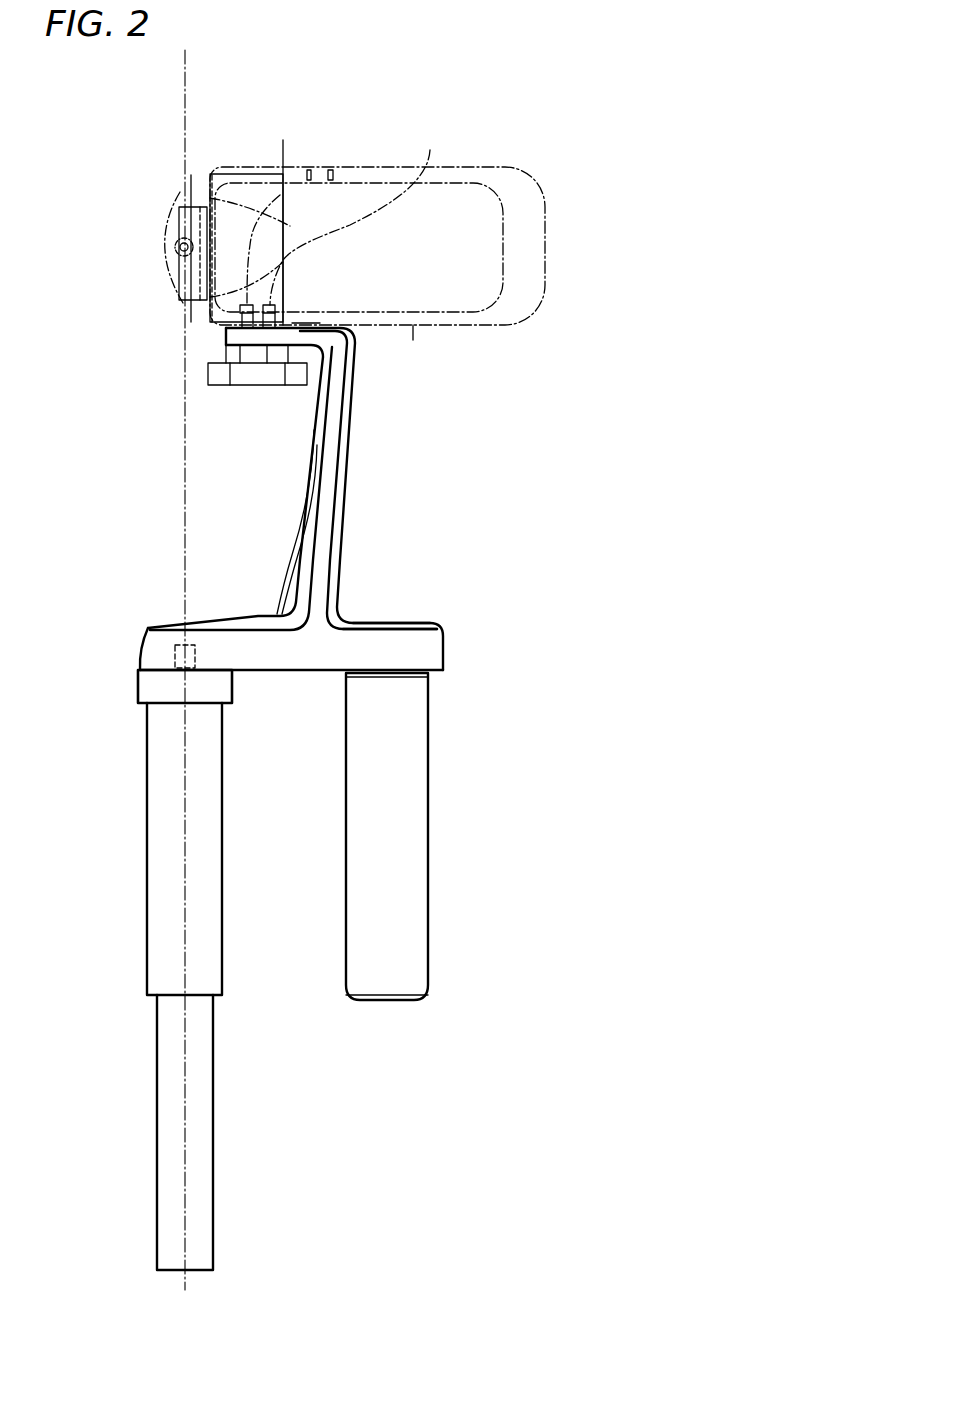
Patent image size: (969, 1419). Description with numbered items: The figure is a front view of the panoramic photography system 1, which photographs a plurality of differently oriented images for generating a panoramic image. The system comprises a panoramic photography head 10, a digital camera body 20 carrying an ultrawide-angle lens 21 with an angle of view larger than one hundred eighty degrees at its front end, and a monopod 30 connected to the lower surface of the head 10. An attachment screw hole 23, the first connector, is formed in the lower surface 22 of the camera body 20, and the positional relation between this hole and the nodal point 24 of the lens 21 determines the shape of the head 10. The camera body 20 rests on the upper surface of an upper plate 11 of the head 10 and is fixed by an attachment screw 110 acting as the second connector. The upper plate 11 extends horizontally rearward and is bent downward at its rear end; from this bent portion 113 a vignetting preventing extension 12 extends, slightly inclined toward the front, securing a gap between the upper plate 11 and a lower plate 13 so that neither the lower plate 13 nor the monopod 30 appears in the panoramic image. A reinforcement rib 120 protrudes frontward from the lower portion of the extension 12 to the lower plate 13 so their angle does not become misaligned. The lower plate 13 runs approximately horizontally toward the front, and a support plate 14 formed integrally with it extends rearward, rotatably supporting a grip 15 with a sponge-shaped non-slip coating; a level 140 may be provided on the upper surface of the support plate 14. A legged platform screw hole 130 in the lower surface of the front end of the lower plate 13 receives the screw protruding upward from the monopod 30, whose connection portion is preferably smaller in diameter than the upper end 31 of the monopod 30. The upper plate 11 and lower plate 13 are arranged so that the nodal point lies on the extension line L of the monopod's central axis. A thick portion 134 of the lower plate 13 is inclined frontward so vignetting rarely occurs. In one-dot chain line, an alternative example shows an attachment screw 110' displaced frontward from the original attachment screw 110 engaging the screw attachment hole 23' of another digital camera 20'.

The panoramic photography system 1 is at (575, 168).
The extension line of the central axis L is at (186, 68).
The panoramic photography head 10 is at (352, 494).
The upper plate 11 is at (222, 337).
The vignetting preventing extension 12 is at (346, 532).
The lower plate 13 is at (160, 620).
The support plate 14 is at (385, 625).
The grip 15 is at (430, 830).
The digital camera body 20 is at (377, 298).
The another digital camera 20' is at (302, 208).
The ultrawide-angle lens 21 is at (176, 246).
The lower surface of the digital camera body 22 is at (414, 342).
The attachment screw hole 23 is at (358, 209).
The screw attachment hole 23' is at (271, 218).
The nodal point of the lens 24 is at (152, 240).
The monopod 30 is at (148, 856).
The upper end of the monopod 31 is at (137, 690).
The attachment screw 110 is at (274, 397).
The attachment screw (alternative) 110' is at (221, 397).
The bent portion 113 is at (340, 351).
The reinforcement rib 120 is at (280, 568).
The legged platform screw hole 130 is at (173, 652).
The thick portion of the lower plate 134 is at (143, 650).
The level 140 is at (403, 625).